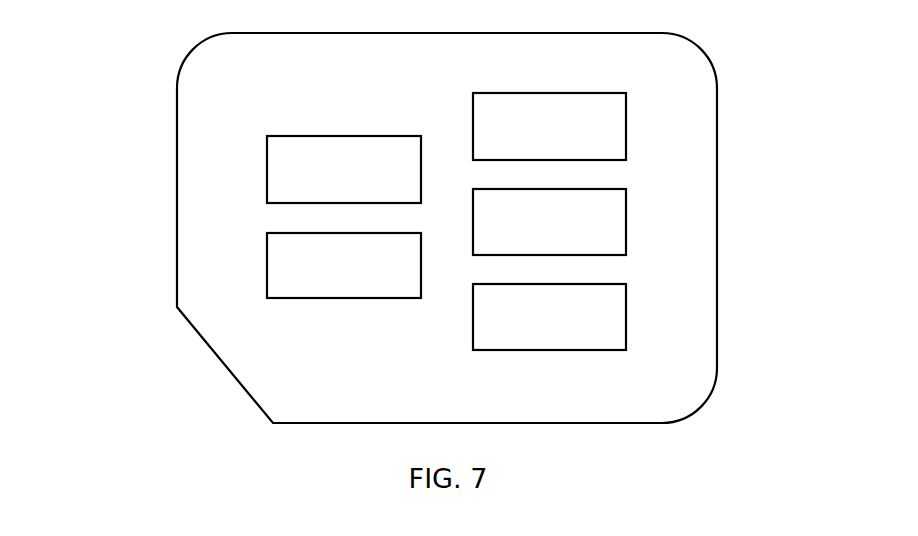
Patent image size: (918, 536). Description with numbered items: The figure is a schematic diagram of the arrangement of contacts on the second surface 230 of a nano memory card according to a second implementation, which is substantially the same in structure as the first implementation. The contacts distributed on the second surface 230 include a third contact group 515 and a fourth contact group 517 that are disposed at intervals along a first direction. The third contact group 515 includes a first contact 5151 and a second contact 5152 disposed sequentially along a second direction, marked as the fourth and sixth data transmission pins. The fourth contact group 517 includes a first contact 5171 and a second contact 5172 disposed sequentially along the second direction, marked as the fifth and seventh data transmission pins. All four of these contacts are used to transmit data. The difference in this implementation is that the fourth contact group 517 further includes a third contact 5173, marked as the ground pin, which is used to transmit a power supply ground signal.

The second surface 230 is at (253, 70).
The third contact group 515 is at (224, 214).
The first contact 5151 is at (275, 153).
The second contact 5152 is at (275, 278).
The fourth contact group 517 is at (671, 221).
The first contact 5171 is at (626, 128).
The second contact 5172 is at (626, 249).
The third contact 5173 is at (636, 317).